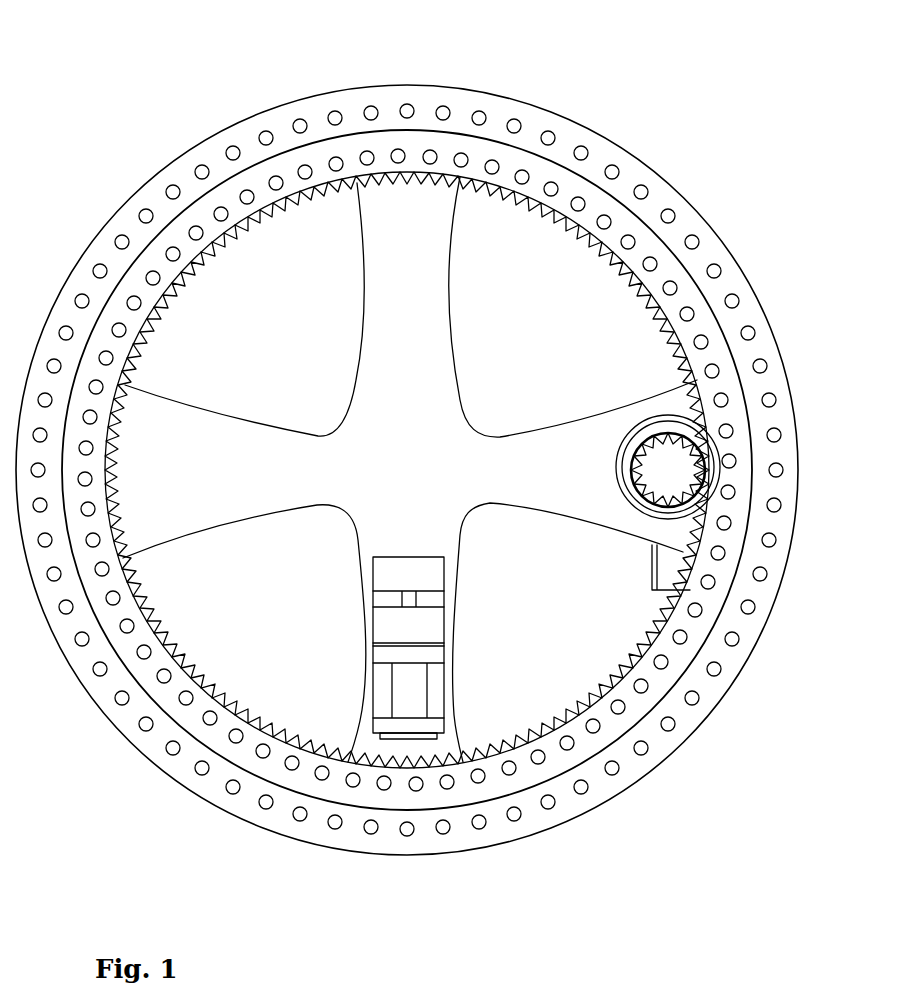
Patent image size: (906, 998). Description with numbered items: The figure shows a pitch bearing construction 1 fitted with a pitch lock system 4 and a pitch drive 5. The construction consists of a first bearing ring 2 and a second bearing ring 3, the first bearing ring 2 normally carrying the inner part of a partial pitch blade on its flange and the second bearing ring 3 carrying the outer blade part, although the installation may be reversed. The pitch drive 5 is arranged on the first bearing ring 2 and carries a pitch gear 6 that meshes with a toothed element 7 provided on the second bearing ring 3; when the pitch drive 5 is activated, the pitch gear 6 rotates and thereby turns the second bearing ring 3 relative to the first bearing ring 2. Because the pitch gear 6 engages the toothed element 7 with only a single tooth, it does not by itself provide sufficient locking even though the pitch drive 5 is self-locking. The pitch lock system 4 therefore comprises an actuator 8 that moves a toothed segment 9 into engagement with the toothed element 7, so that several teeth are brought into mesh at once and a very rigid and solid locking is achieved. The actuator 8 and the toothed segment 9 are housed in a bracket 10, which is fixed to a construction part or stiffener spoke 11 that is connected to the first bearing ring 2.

The pitch bearing construction 1 is at (138, 105).
The first bearing ring 2 is at (388, 97).
The second bearing ring 3 is at (510, 157).
The pitch lock system 4 is at (398, 578).
The pitch drive 5 is at (638, 430).
The pitch gear 6 is at (660, 477).
The toothed element 7 is at (490, 180).
The actuator 8 is at (427, 627).
The toothed segment 9 is at (428, 744).
The bracket 10 is at (383, 654).
The stiffener spoke 11 is at (213, 447).